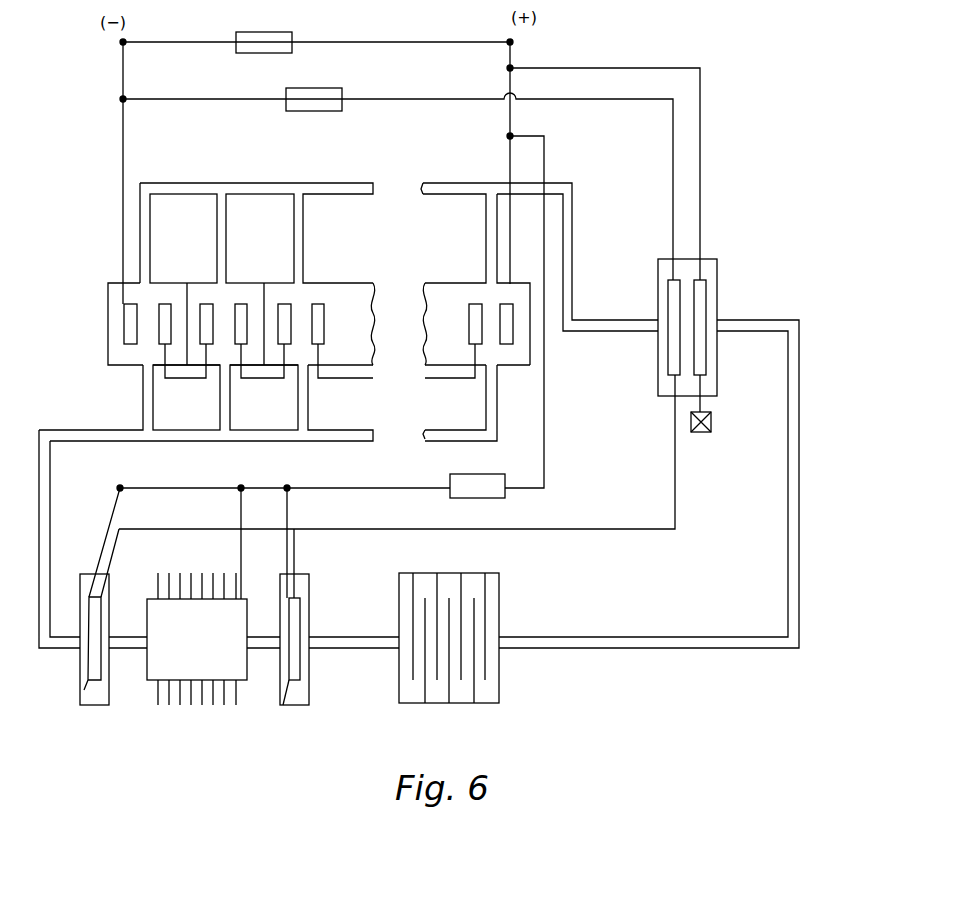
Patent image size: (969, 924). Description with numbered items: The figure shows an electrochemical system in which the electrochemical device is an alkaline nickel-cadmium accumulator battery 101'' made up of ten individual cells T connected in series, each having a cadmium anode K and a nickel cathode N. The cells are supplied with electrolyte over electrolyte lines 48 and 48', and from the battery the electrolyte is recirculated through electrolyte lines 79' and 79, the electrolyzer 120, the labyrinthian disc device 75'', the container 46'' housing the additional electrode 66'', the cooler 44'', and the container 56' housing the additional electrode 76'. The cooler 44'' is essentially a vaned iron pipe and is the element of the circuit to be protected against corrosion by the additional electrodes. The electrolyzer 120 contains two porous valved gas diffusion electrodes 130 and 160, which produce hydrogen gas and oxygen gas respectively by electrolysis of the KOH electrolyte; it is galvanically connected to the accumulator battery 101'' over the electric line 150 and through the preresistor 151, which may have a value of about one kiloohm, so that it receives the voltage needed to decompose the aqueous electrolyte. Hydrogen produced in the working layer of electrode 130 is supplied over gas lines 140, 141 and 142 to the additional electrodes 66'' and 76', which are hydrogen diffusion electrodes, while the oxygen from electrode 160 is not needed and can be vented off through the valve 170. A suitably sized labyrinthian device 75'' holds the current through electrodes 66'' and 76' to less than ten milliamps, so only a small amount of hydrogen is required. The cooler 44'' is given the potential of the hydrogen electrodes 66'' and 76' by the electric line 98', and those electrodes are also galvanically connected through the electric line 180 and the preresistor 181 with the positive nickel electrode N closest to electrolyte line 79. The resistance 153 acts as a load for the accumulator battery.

The resistance 153 is at (264, 32).
The preresistor 151 is at (320, 88).
The electric line 150 is at (417, 98).
The electrolyte line 79' is at (399, 274).
The electrolyte line 79 is at (668, 445).
The alkaline nickel-cadmium accumulator battery 101'' is at (291, 330).
The electrolyte line 48' is at (289, 403).
The electrolyte line 48 is at (219, 539).
The electrolyzer 120 is at (718, 290).
The electrode 130 is at (668, 341).
The electrode 160 is at (708, 317).
The valve 170 is at (712, 428).
The electric line 180 is at (406, 481).
The preresistor 181 is at (478, 474).
The gas line 140 is at (450, 526).
The electric line 98' is at (262, 543).
The gas line 142 is at (113, 558).
The gas line 141 is at (299, 558).
The additional electrode 76' is at (67, 654).
The container 56' is at (108, 657).
The cooler 44'' is at (199, 656).
The additional electrode 66'' is at (275, 655).
The container 46'' is at (316, 654).
The labyrinthian disc device 75'' is at (480, 638).